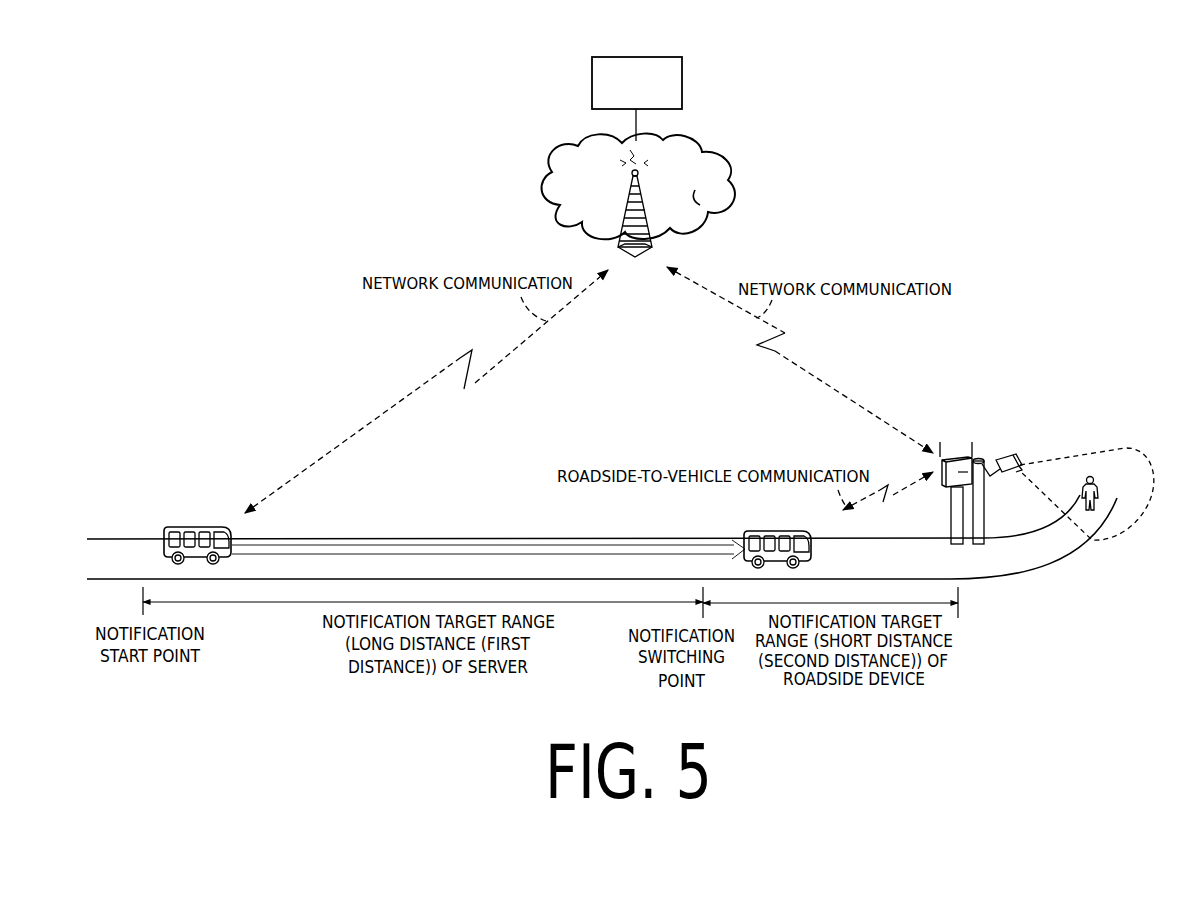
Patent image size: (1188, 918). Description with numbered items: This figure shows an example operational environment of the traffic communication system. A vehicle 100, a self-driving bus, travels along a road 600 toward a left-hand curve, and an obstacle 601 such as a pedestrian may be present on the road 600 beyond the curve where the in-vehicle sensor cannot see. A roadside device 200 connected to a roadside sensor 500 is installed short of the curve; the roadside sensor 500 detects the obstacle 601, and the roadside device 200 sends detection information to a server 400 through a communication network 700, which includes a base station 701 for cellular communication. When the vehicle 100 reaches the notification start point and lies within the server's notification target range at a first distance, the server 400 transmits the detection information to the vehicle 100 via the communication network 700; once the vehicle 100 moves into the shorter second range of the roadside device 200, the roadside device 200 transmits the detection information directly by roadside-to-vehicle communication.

The vehicle 100 is at (203, 527).
The roadside device 200 is at (953, 456).
The server 400 is at (640, 57).
The roadside sensor 500 is at (1010, 458).
The road 600 is at (121, 557).
The obstacle 601 is at (1092, 477).
The communication network 700 is at (722, 153).
The base station 701 is at (641, 193).